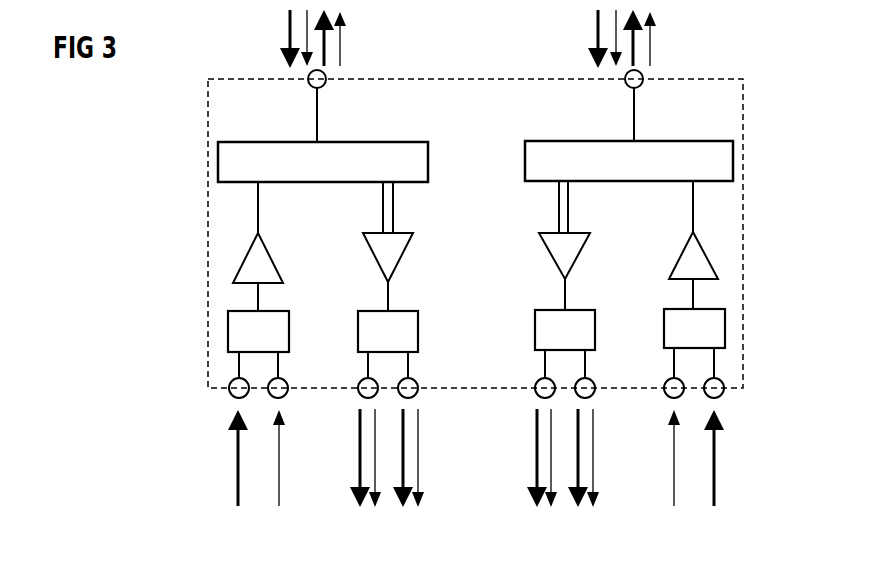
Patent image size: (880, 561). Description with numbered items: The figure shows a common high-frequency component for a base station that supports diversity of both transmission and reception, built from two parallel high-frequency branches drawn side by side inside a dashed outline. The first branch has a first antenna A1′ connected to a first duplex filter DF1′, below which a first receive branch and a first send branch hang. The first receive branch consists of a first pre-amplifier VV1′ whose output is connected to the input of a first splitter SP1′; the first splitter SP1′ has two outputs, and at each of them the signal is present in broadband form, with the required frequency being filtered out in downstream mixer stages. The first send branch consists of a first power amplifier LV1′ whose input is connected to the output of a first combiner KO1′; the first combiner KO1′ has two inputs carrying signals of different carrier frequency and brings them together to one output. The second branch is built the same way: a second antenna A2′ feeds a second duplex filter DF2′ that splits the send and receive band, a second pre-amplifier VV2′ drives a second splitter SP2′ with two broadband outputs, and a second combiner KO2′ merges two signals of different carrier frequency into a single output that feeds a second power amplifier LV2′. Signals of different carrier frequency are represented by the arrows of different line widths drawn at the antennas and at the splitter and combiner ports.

The first antenna A1′ is at (315, 102).
The second antenna A2′ is at (632, 105).
The first duplex filter DF1′ is at (323, 162).
The second duplex filter DF2′ is at (629, 161).
The first power amplifier LV1′ is at (255, 260).
The second power amplifier LV2′ is at (698, 263).
The first pre-amplifier VV1′ is at (390, 257).
The second pre-amplifier VV2′ is at (560, 248).
The first combiner KO1′ is at (243, 332).
The second combiner KO2′ is at (710, 323).
The first splitter SP1′ is at (375, 327).
The second splitter SP2′ is at (577, 335).